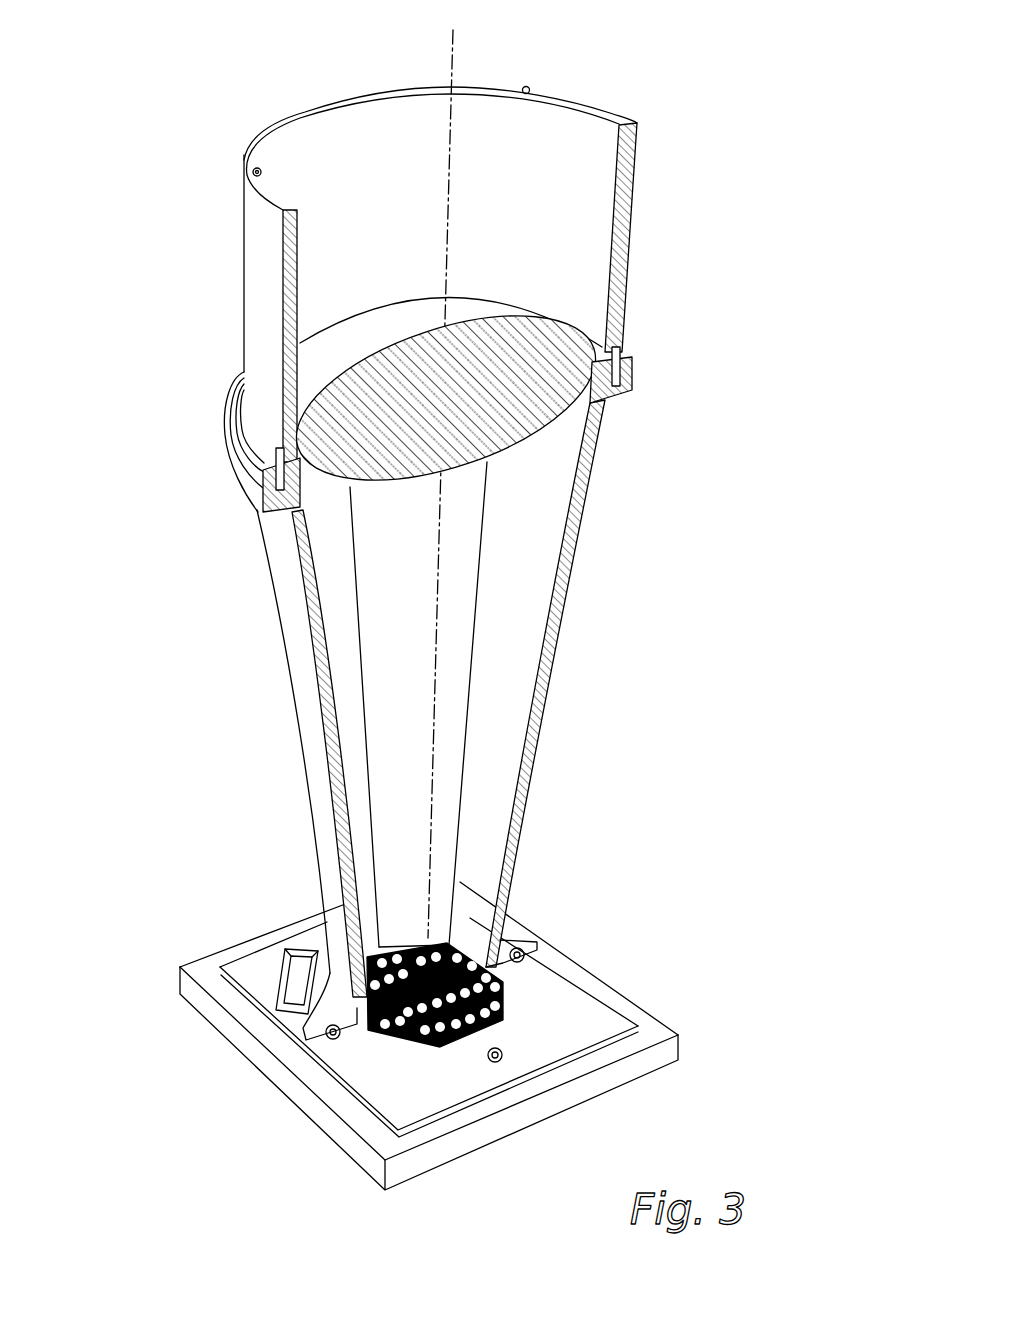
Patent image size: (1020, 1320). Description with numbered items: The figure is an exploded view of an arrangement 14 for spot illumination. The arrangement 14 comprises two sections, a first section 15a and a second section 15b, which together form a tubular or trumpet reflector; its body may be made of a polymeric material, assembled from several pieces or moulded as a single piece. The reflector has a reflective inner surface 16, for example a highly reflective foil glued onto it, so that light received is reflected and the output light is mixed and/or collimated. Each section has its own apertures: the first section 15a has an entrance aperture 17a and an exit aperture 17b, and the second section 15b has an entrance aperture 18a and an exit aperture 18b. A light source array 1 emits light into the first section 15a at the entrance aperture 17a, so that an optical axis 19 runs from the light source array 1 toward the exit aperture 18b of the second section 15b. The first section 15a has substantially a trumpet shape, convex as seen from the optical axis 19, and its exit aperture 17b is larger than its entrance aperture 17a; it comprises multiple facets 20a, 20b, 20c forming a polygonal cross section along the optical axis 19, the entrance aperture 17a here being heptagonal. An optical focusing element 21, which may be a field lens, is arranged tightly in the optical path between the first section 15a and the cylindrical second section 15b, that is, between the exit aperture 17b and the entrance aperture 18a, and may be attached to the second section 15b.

The light source array 1 is at (497, 997).
The arrangement for spot illumination 14 is at (615, 576).
The first section 15a is at (293, 702).
The second section 15b is at (245, 295).
The reflective inner surface 16 is at (558, 482).
The entrance aperture of the first section 17a is at (483, 942).
The exit aperture of the first section 17b is at (562, 422).
The entrance aperture of the second section 18a is at (593, 313).
The exit aperture of the second section 18b is at (567, 143).
The optical axis 19 is at (453, 68).
The facet 20a is at (493, 743).
The facet 20b is at (447, 702).
The facet 20c is at (357, 763).
The optical focusing element 21 is at (328, 447).